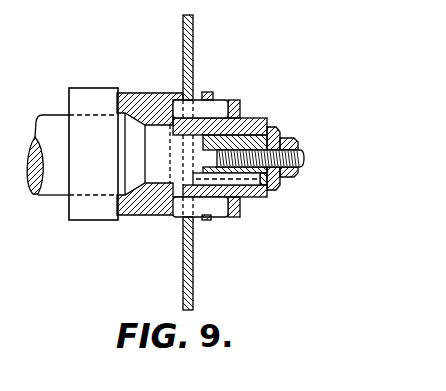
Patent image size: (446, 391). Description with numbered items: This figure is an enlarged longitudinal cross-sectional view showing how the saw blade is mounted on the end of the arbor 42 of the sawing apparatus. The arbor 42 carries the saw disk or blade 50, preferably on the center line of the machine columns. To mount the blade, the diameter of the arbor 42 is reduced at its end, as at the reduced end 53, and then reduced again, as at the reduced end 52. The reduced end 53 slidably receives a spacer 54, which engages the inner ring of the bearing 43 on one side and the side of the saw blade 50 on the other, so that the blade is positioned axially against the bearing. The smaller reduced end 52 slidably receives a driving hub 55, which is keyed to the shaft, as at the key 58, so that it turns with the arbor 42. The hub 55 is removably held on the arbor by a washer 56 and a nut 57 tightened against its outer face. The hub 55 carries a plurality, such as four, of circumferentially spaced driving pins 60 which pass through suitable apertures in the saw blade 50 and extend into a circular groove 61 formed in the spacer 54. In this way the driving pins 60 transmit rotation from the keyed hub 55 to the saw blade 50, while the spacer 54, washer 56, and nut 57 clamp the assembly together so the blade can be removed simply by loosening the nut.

The arbor 42 is at (58, 140).
The bearing 43 is at (87, 212).
The saw blade 50 is at (197, 290).
The reduced end 52 is at (222, 133).
The reduced end 53 is at (156, 128).
The spacer 54 is at (142, 212).
The driving hub 55 is at (239, 197).
The washer 56 is at (273, 130).
The nut 57 is at (295, 144).
The key 58 is at (252, 182).
The driving pins 60 is at (215, 110).
The circular groove 61 is at (180, 218).